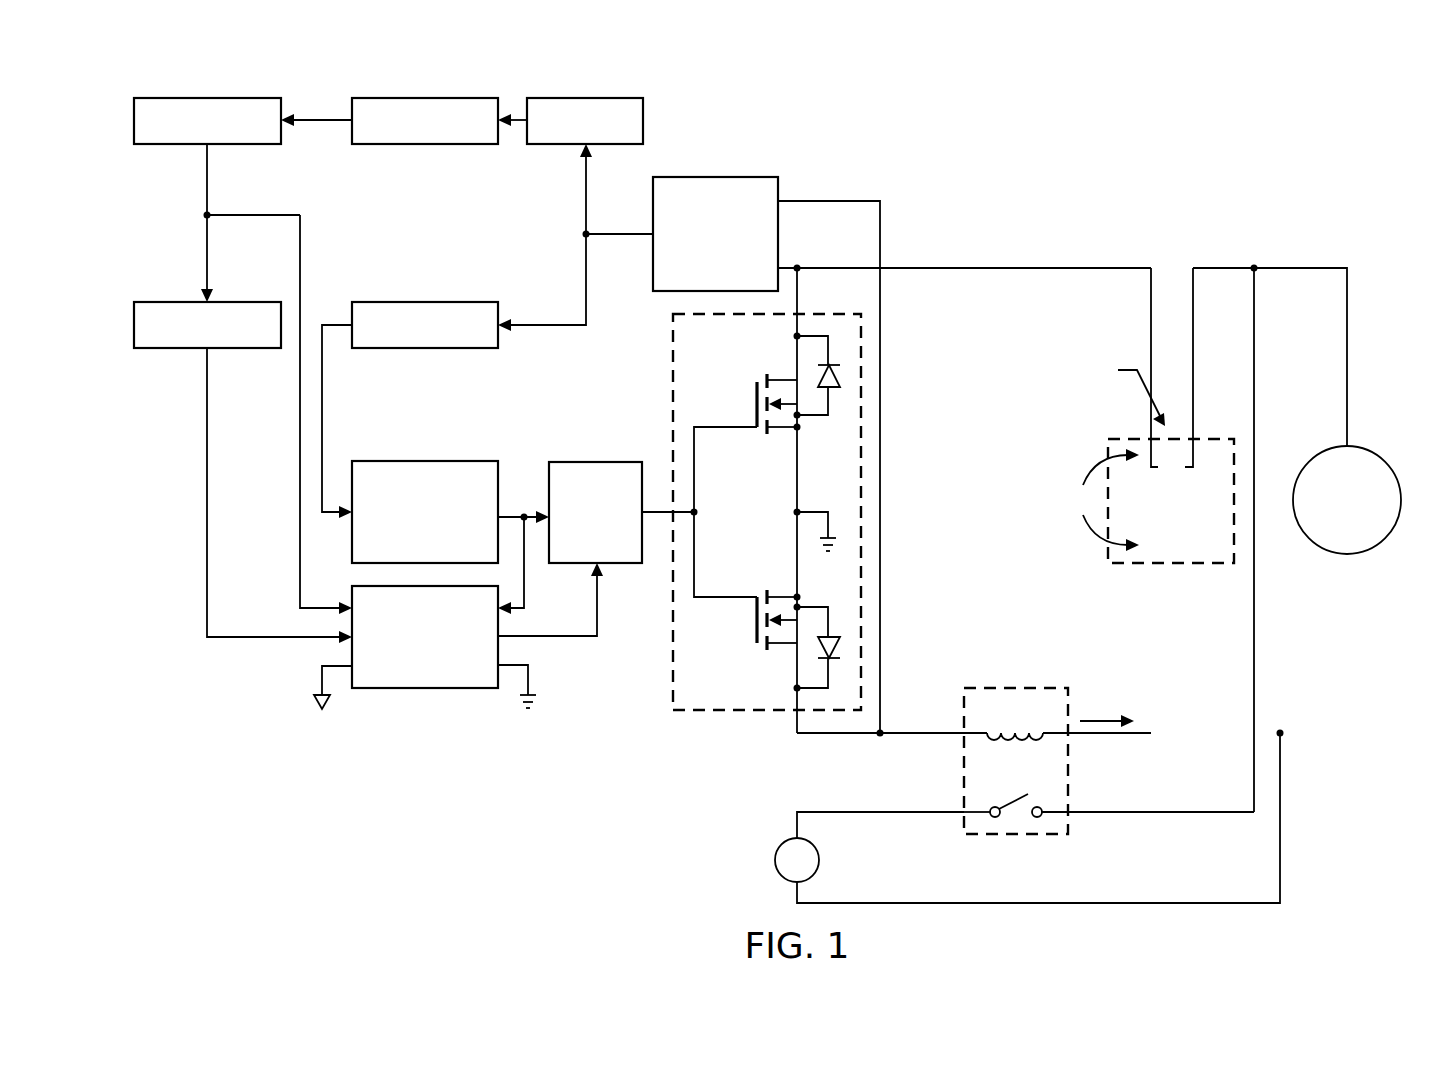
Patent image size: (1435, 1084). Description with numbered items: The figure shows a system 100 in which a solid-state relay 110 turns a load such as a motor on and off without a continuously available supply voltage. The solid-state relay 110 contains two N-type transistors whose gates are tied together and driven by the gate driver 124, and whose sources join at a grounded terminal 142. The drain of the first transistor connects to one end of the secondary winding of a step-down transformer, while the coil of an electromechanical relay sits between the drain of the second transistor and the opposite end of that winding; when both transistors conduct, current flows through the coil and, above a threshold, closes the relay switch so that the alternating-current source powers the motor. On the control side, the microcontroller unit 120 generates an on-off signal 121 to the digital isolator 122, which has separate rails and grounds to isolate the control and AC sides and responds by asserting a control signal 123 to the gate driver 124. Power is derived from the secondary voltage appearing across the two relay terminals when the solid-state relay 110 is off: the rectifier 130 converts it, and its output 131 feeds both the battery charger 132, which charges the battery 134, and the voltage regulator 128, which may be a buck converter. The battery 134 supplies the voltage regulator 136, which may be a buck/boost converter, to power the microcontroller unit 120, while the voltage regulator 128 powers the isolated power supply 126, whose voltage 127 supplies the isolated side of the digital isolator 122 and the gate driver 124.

The system 100 is at (870, 122).
The solid-state relay 110 is at (729, 500).
The microcontroller unit 120 is at (178, 302).
The ON/OFF signal 121 is at (256, 638).
The digital isolator 122 is at (425, 689).
The control signal 123 is at (552, 637).
The gate driver 124 is at (587, 462).
The isolated power supply 126 is at (425, 461).
The voltage 127 is at (524, 566).
The voltage regulator 128 is at (425, 302).
The rectifier 130 is at (695, 267).
The output of rectifier 131 is at (623, 233).
The battery charger 132 is at (575, 98).
The battery 134 is at (425, 98).
The voltage regulator 136 is at (198, 98).
The terminal 142 is at (795, 507).